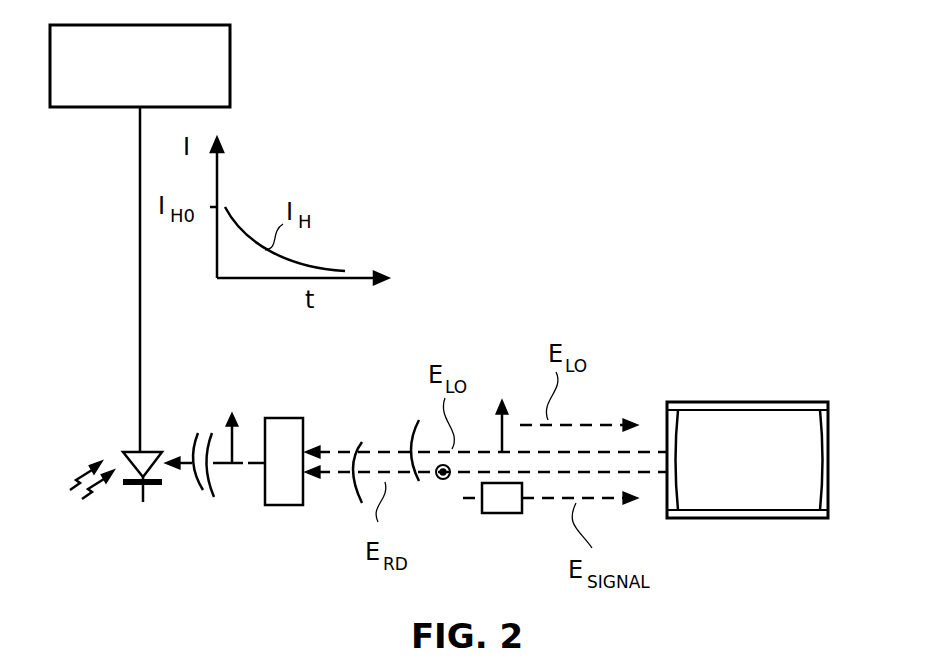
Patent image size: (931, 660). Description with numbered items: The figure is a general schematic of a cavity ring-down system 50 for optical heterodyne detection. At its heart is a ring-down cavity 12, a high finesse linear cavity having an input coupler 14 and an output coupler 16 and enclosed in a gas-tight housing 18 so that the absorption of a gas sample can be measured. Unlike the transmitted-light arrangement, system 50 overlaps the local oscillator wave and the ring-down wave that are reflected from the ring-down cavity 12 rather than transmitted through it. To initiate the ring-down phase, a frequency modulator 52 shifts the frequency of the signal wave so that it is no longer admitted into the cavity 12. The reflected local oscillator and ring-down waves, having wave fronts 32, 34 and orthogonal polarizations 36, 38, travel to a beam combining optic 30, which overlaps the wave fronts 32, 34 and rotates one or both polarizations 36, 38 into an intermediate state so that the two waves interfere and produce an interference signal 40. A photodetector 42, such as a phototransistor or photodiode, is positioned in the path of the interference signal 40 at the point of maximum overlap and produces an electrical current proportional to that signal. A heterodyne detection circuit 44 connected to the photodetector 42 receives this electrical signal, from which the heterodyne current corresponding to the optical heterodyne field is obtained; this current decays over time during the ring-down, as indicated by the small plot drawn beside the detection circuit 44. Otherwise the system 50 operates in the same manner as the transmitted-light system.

The ring-down cavity 12 is at (733, 435).
The input coupler 14 is at (665, 423).
The output coupler 16 is at (830, 425).
The gas-tight housing 18 is at (738, 518).
The beam combining optic 30 is at (295, 418).
The wave front 32 is at (214, 497).
The wave front 34 is at (198, 432).
The polarization 36 is at (232, 440).
The polarization 38 is at (440, 480).
The interference signal 40 is at (248, 466).
The photodetector 42 is at (145, 490).
The heterodyne detection circuit 44 is at (232, 52).
The cavity ring-down system 50 is at (637, 220).
The frequency modulator 52 is at (503, 513).